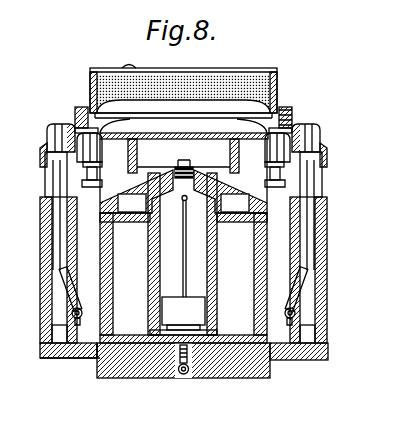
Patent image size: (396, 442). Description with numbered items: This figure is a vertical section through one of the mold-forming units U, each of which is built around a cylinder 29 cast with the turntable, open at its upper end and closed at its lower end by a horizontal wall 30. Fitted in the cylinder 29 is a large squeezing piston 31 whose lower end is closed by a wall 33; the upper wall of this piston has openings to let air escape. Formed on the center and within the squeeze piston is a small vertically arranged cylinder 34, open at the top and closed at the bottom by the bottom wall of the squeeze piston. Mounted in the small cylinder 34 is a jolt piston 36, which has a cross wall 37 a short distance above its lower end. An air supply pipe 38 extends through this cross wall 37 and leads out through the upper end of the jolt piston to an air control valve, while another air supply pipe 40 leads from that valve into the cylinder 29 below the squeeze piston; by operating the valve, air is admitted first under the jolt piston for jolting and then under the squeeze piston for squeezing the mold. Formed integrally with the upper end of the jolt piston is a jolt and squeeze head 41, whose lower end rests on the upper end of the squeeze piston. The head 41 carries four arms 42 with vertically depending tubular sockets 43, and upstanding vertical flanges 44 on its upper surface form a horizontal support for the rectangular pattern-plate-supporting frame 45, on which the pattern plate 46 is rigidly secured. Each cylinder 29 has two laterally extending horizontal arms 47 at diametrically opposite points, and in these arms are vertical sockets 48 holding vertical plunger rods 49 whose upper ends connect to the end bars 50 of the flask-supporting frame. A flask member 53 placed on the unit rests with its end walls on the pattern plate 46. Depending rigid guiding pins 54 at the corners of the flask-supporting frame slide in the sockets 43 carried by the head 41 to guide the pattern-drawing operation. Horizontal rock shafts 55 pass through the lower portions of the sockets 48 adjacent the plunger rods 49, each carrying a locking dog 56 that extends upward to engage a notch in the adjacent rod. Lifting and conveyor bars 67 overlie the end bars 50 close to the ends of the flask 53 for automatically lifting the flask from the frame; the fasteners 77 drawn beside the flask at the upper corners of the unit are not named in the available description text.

The cylinder 29 is at (94, 338).
The horizontal wall 30 is at (140, 372).
The squeezing piston 31 is at (72, 240).
The wall 33 is at (162, 338).
The small vertically arranged cylinder 34 is at (218, 290).
The jolt piston 36 is at (147, 248).
The cross wall 37 is at (183, 313).
The air supply pipe 38 is at (182, 216).
The air supply pipe 40 is at (190, 366).
The jolt and squeeze head 41 is at (183, 191).
The arms 42 is at (143, 198).
The tubular sockets 43 is at (138, 162).
The vertical flanges 44 is at (238, 185).
The pattern-plate-supporting frame 45 is at (152, 137).
The pattern plate 46 is at (222, 148).
The horizontal extensions or arms 47 is at (42, 293).
The vertical sockets 48 is at (54, 333).
The plunger rods 49 is at (55, 179).
The end bars 50 is at (49, 143).
The flask member 53 is at (278, 76).
The guiding pin 54 is at (80, 170).
The rock shafts 55 is at (295, 318).
The locking dog 56 is at (62, 285).
The lifting and conveyor bars 67 is at (288, 112).
The bolt 77 is at (86, 106).
The mold-forming unit U is at (72, 108).